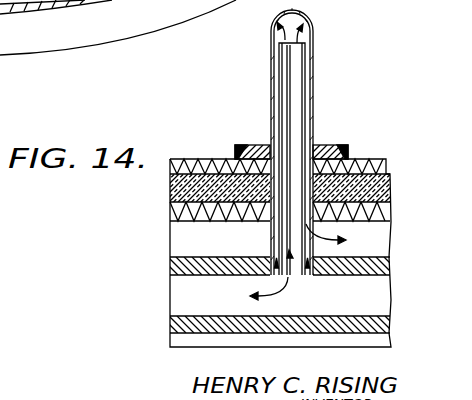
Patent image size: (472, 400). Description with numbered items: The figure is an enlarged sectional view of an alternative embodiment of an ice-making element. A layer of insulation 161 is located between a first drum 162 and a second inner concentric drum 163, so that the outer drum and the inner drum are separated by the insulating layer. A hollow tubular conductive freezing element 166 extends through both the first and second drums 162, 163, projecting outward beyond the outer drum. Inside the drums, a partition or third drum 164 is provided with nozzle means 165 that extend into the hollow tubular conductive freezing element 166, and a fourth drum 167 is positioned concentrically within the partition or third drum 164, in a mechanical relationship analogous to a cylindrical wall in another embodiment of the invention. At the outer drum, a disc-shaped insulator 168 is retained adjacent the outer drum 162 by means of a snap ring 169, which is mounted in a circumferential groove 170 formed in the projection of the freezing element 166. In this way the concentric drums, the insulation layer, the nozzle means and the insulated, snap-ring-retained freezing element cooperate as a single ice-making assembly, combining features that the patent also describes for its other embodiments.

The layer of insulation 161 is at (172, 190).
The first drum 162 is at (208, 159).
The second inner concentric drum 163 is at (172, 212).
The partition or third drum 164 is at (173, 267).
The nozzle means 165 is at (276, 241).
The hollow tubular conductive freezing element 166 is at (313, 44).
The fourth drum 167 is at (177, 316).
The disc-shaped insulator 168 is at (345, 150).
The snap ring 169 is at (268, 145).
The circumferential groove 170 is at (312, 141).